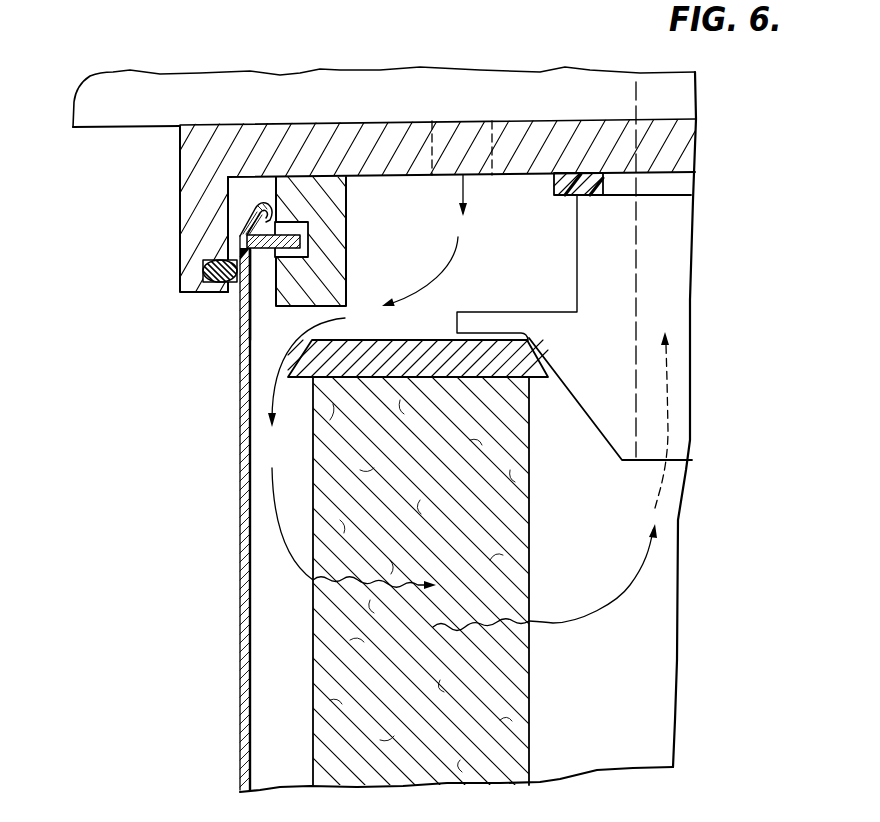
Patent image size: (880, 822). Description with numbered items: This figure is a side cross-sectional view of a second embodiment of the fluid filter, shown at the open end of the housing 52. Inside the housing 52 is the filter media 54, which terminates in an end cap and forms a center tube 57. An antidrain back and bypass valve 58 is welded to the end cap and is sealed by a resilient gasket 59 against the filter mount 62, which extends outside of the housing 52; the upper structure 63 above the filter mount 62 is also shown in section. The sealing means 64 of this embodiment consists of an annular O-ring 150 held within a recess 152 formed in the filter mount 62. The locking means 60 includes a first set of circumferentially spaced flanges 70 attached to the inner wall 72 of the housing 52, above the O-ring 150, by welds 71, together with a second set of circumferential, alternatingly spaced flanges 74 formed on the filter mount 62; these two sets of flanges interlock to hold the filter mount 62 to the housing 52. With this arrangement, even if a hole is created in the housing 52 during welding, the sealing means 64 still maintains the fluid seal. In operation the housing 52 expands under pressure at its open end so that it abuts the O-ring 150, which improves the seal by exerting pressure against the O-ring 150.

The housing 52 is at (242, 543).
The filter media 54 is at (520, 693).
The center tube 57 is at (637, 753).
The antidrain back and bypass valve 58 is at (600, 415).
The resilient gasket 59 is at (563, 196).
The locking means 60 is at (330, 239).
The filter mount 62 is at (197, 205).
The upper panel 63 is at (279, 82).
The sealing means 64 is at (203, 302).
The first set of circumferentially spaced flanges 70 is at (255, 250).
The welds 71 is at (245, 298).
The inner wall 72 is at (251, 336).
The second set of circumferential, alternatingly spaced flanges 74 is at (333, 214).
The annular O-ring 150 is at (210, 268).
The recess 152 is at (212, 262).